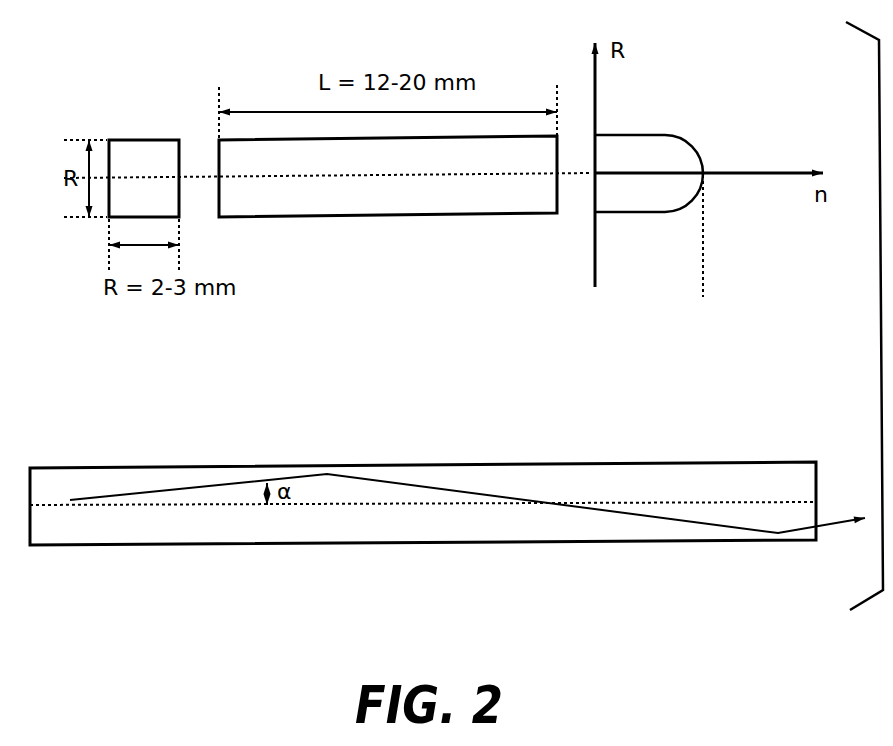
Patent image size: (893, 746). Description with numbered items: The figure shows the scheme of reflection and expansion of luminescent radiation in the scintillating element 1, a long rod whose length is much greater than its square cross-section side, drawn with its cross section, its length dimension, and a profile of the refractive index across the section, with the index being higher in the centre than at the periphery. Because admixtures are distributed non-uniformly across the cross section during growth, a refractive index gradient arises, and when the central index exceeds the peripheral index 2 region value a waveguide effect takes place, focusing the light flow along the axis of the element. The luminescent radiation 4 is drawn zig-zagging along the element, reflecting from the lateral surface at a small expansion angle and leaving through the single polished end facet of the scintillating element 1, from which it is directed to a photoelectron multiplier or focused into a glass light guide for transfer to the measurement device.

The scintillating element 1 is at (762, 455).
The rod tip region with refractive index n2 2 is at (665, 135).
The luminescent radiation 4 is at (467, 513).